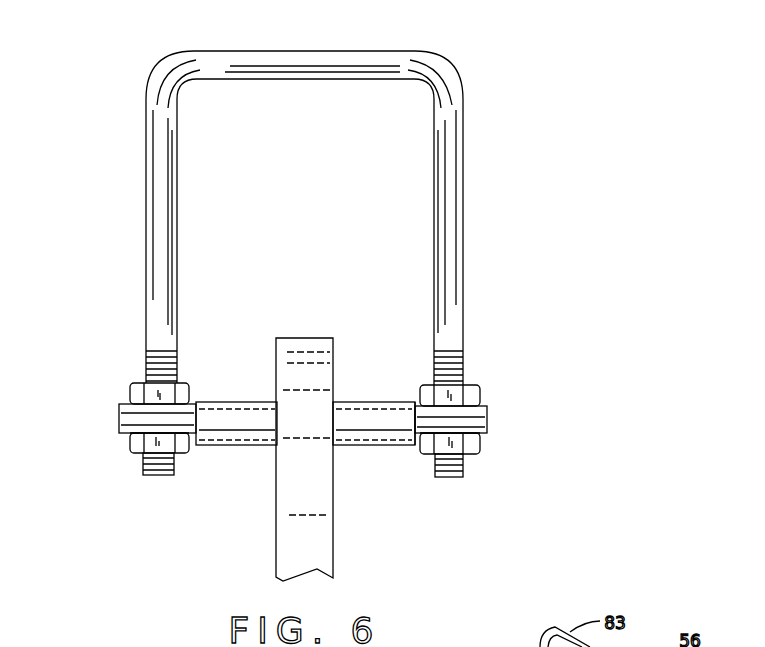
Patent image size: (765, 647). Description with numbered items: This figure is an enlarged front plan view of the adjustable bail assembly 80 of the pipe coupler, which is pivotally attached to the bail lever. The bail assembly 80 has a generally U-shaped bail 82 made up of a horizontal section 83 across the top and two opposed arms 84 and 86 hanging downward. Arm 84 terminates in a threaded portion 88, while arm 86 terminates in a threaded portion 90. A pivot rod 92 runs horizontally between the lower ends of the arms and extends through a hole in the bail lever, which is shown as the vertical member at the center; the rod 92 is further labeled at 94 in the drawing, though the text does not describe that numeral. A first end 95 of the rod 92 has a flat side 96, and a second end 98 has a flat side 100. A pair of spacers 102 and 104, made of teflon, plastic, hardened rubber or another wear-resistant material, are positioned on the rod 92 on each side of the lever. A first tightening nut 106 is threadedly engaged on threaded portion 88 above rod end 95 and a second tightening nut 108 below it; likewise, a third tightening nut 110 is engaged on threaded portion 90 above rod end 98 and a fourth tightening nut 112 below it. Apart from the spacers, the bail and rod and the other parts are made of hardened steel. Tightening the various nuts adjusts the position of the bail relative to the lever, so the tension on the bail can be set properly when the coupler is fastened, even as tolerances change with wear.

The bail assembly 80 is at (440, 43).
The bail 82 is at (452, 100).
The horizontal section 83 is at (298, 58).
The arm 84 is at (453, 230).
The arm 86 is at (156, 250).
The threaded portion 88 is at (462, 357).
The threaded portion 90 is at (146, 368).
The pivot rod 92 is at (417, 420).
The cross bar 94 is at (338, 402).
The first end 95 is at (483, 420).
The flat side 96 is at (470, 433).
The second end 98 is at (128, 421).
The flat side 100 is at (125, 433).
The spacer 102 is at (244, 414).
The spacer 104 is at (372, 428).
The first tightening nut 106 is at (471, 398).
The second tightening nut 108 is at (472, 452).
The third tightening nut 110 is at (130, 392).
The fourth tightening nut 112 is at (192, 448).